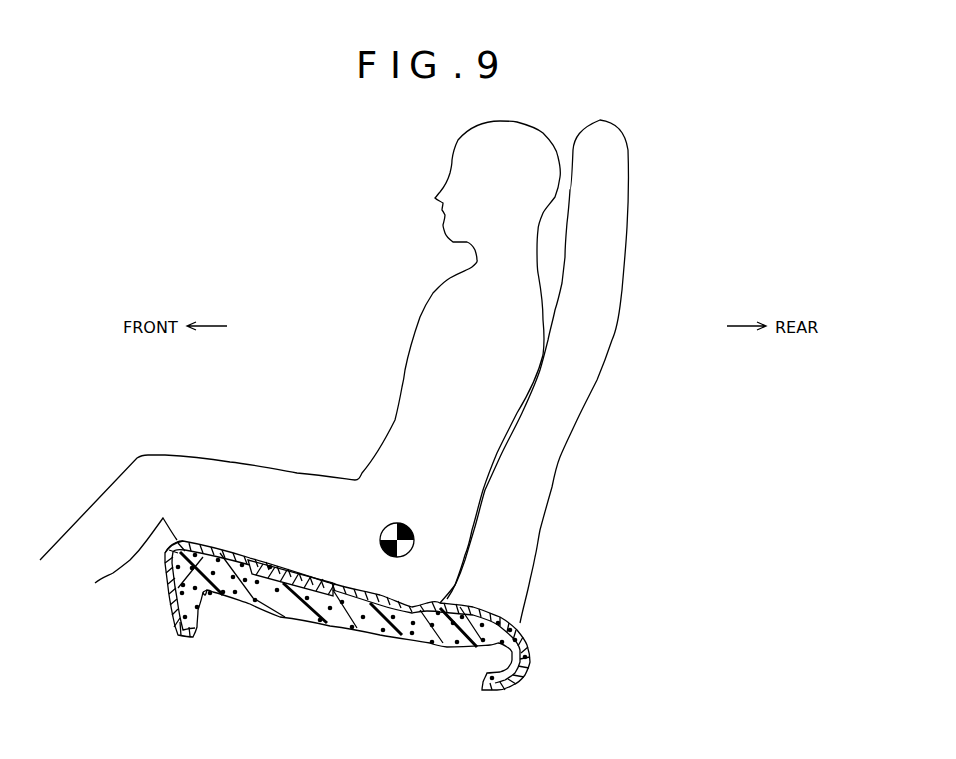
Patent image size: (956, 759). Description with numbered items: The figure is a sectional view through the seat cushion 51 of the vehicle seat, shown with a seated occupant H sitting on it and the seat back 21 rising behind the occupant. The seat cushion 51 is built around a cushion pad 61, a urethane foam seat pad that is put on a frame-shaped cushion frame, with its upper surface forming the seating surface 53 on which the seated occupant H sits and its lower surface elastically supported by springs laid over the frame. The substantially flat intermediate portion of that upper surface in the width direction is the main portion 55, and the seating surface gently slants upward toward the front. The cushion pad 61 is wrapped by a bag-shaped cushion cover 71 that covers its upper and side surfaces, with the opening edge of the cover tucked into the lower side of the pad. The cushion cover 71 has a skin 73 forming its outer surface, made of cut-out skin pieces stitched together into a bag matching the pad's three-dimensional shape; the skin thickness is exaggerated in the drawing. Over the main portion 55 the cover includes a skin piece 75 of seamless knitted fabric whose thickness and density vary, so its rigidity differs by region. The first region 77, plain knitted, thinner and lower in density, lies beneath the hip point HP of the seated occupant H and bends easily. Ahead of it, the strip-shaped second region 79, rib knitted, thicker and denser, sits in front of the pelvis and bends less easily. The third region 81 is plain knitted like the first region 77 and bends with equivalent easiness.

The seat back 21 is at (550, 492).
The seat cushion 51 is at (168, 592).
The seating surface 53 is at (226, 535).
The main portion 55 is at (277, 563).
The cushion pad 61 is at (245, 590).
The cushion cover 71 is at (190, 544).
The skin 73 is at (317, 580).
The skin piece 75 is at (291, 578).
The first region 77 is at (402, 637).
The second region 79 is at (289, 605).
The third region 81 is at (211, 605).
The seated occupant H is at (383, 420).
The hip point HP is at (415, 527).